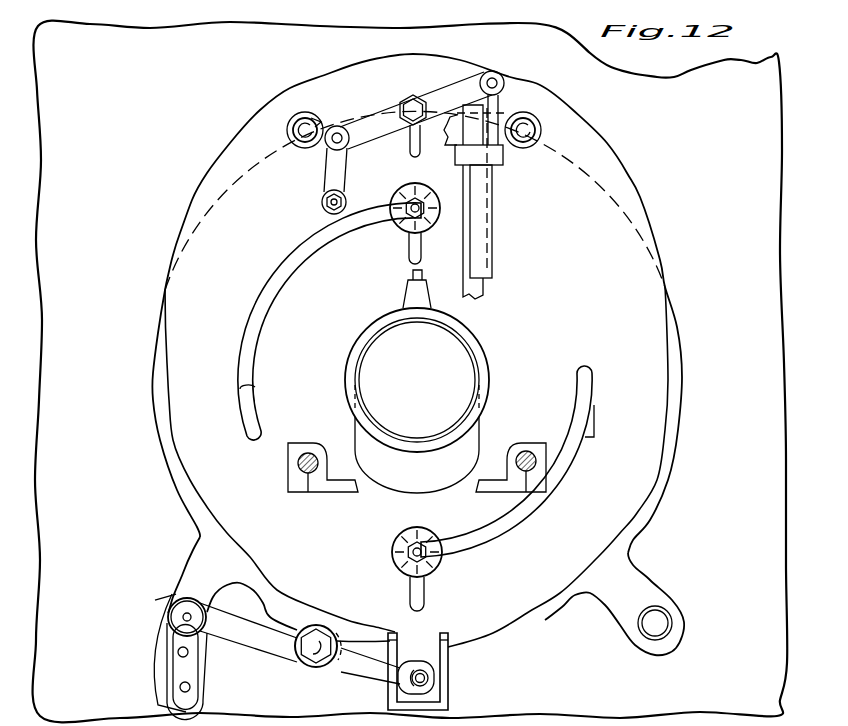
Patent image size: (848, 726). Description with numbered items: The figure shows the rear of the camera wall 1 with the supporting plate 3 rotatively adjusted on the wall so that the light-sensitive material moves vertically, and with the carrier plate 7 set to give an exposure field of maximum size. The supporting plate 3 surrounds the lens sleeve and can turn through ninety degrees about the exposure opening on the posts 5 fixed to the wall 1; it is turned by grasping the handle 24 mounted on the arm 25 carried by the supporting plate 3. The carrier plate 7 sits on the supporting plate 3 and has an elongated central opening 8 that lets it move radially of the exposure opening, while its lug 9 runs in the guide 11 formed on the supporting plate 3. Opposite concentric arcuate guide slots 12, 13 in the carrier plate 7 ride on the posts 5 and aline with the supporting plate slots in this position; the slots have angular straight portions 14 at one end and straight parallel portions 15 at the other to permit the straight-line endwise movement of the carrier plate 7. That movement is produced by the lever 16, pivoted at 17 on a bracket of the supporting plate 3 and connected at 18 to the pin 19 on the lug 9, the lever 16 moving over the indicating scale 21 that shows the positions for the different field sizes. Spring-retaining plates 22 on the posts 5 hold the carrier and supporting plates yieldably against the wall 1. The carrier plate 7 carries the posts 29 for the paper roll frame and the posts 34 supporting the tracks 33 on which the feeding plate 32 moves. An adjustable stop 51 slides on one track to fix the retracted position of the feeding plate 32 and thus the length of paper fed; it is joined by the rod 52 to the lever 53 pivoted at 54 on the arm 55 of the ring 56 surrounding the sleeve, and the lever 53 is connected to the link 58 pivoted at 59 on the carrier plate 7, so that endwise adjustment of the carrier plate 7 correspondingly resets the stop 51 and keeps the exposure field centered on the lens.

The wall 1 is at (606, 99).
The supporting plate 3 is at (643, 201).
The posts 5 is at (428, 205).
The carrier plate 7 is at (614, 150).
The elongated central opening 8 is at (380, 481).
The lug 9 is at (404, 695).
The guide 11 is at (446, 705).
The arcuate guide slot 12 is at (301, 254).
The arcuate guide slot 13 is at (530, 518).
The angular straight portions 14 is at (411, 244).
The straight parallel portions 15 is at (241, 410).
The lever 16 is at (257, 638).
The pivot 17 is at (306, 662).
The connection 18 is at (430, 680).
The pin 19 is at (428, 674).
The indicating scale 21 is at (186, 579).
The spring-retaining plates 22 is at (425, 190).
The handle 24 is at (665, 623).
The arm 25 is at (612, 605).
The posts 29 is at (297, 463).
The feeding plate 32 is at (493, 237).
The tracks 33 is at (484, 291).
The posts 34 is at (306, 128).
The adjustable stop 51 is at (503, 160).
The rod 52 is at (500, 110).
The lever 53 is at (451, 92).
The pivot 54 is at (413, 97).
The arm 55 is at (409, 140).
The ring 56 is at (481, 347).
The link 58 is at (330, 160).
The pivot 59 is at (322, 200).